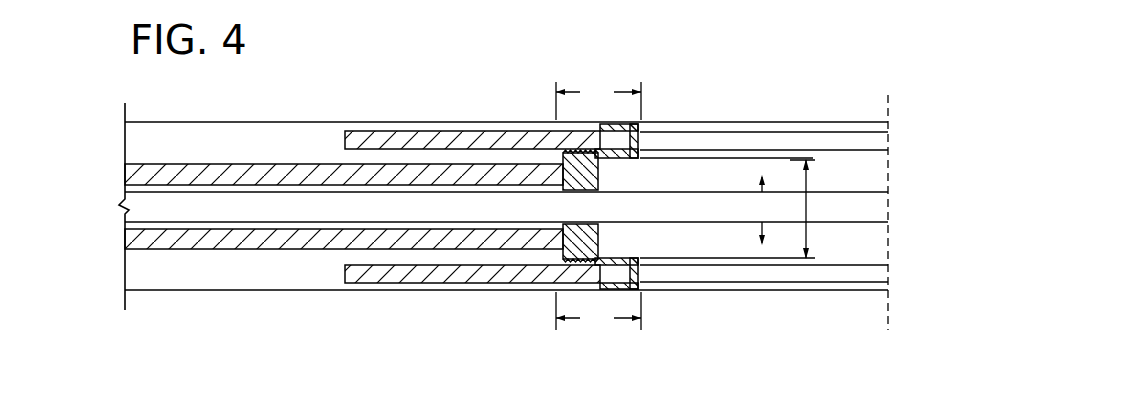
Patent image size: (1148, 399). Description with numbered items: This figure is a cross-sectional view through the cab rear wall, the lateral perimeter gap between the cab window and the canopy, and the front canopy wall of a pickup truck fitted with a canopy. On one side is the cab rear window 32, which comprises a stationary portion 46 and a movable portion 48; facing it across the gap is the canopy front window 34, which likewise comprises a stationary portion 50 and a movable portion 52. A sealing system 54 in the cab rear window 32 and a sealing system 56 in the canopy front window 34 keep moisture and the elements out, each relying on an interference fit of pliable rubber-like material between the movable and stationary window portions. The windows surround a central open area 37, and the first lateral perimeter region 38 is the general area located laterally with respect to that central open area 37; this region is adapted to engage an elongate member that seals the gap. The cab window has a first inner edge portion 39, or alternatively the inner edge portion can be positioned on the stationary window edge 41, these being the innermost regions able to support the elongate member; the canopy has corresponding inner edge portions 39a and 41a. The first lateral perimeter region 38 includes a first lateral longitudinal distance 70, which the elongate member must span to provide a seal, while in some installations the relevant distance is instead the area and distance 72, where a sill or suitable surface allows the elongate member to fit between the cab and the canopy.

The cab rear window 32 is at (431, 115).
The canopy front window 34 is at (434, 302).
The central open area 37 is at (872, 219).
The first lateral perimeter region 38 is at (598, 206).
The first inner edge portion 39 is at (641, 138).
The inner edge portion 39a is at (638, 277).
The stationary window edge 41 is at (600, 187).
The inner edge portion 41a is at (597, 234).
The stationary portion 46 is at (212, 173).
The movable portion 48 is at (366, 138).
The stationary portion 50 is at (219, 241).
The movable portion 52 is at (378, 276).
The sealing system 54 is at (600, 172).
The sealing system 56 is at (602, 257).
The first lateral longitudinal distance 70 is at (807, 210).
The area and distance 72 is at (763, 210).